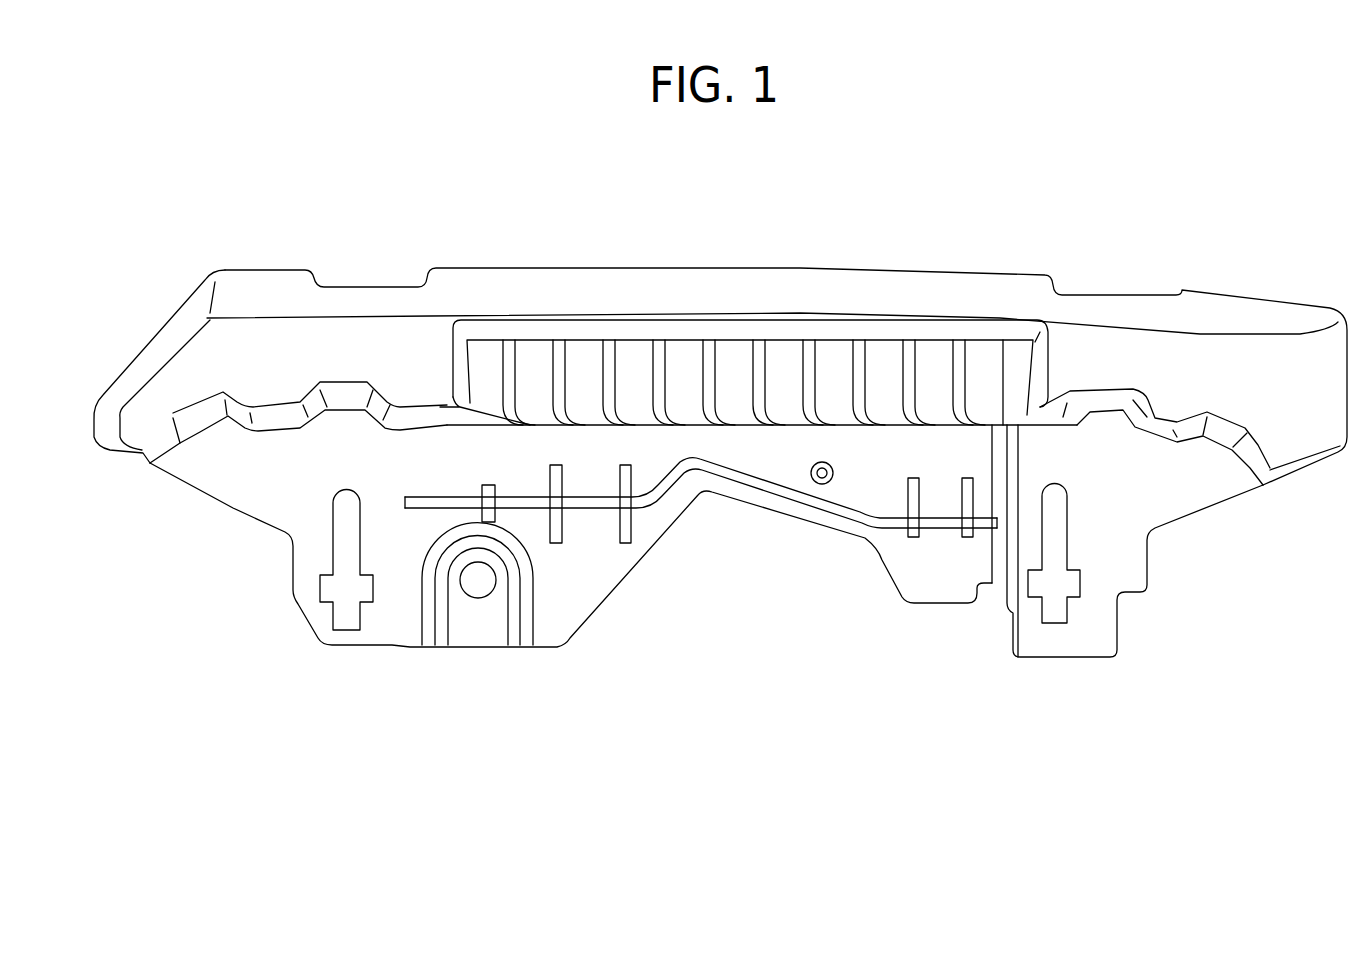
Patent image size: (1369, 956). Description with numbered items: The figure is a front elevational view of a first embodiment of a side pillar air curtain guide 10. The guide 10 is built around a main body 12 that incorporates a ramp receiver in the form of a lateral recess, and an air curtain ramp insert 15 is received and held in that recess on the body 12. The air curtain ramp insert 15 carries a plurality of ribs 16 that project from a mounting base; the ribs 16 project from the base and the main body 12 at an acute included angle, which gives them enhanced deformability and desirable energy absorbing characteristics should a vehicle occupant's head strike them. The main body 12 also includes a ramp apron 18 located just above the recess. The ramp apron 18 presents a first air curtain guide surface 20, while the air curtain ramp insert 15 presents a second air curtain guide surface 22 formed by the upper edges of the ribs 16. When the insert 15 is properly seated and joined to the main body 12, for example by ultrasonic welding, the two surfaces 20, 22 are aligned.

The side pillar air curtain guide 10 is at (1131, 173).
The main body 12 is at (233, 508).
The air curtain ramp insert 15 is at (438, 337).
The ribs 16 is at (583, 353).
The ramp apron 18 is at (522, 263).
The first air curtain guide surface 20 is at (963, 295).
The second air curtain guide surface 22 is at (866, 343).